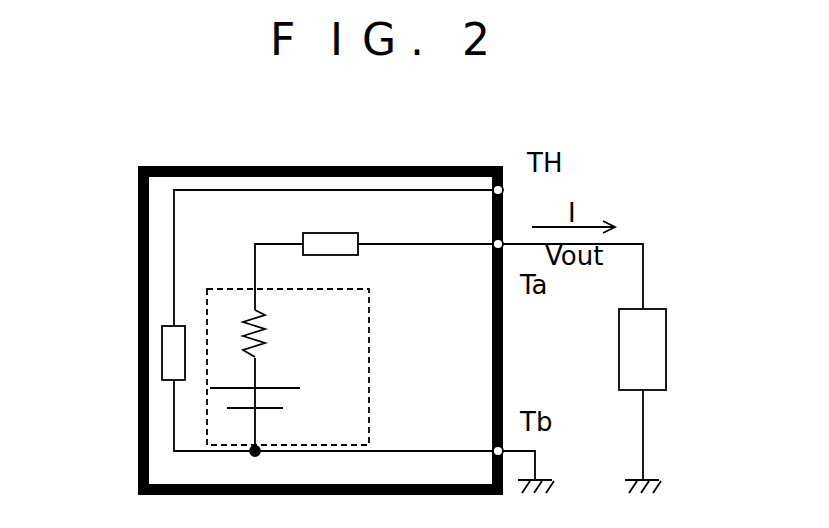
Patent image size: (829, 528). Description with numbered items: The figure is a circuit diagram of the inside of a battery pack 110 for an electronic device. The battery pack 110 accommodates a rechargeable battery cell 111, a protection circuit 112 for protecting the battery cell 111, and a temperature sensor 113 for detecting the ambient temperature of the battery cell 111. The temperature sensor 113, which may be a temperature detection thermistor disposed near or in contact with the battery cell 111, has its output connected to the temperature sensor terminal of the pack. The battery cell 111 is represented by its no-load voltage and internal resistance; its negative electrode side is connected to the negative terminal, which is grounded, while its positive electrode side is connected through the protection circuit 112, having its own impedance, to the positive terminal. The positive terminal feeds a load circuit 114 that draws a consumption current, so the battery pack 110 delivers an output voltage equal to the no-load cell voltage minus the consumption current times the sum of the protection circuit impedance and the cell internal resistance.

The battery pack 110 is at (138, 347).
The rechargeable battery cell 111 is at (369, 367).
The protection circuit 112 is at (348, 233).
The temperature sensor 113 is at (180, 325).
The load circuit 114 is at (666, 350).